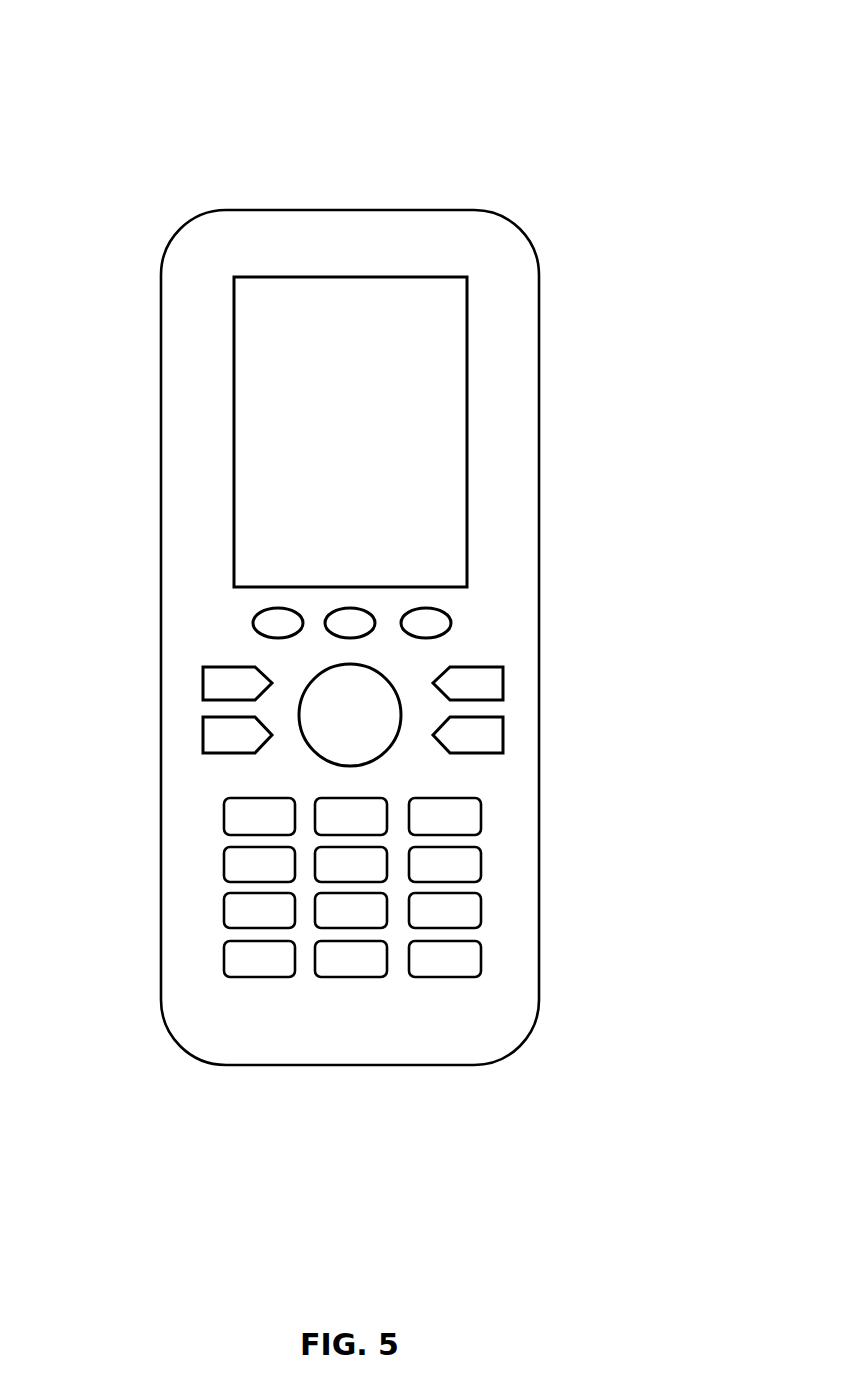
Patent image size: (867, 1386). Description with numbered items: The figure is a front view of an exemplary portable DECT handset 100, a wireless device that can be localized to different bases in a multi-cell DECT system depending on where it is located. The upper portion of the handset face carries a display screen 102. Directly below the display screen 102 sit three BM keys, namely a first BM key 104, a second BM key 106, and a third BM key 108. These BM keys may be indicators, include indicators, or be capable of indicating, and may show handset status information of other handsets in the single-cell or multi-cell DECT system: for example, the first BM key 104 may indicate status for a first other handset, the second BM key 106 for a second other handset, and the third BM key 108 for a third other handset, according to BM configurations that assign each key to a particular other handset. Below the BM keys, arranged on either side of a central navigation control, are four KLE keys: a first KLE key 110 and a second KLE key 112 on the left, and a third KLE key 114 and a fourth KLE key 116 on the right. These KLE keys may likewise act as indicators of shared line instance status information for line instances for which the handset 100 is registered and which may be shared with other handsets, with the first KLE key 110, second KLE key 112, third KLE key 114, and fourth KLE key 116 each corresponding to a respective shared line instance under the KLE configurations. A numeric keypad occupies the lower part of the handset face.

The portable DECT handset 100 is at (578, 105).
The display screen 102 is at (350, 277).
The first BM key 104 is at (262, 608).
The second BM key 106 is at (370, 608).
The third BM key 108 is at (443, 608).
The first KLE key 110 is at (203, 683).
The second KLE key 112 is at (203, 735).
The third KLE key 114 is at (503, 683).
The fourth KLE key 116 is at (503, 735).